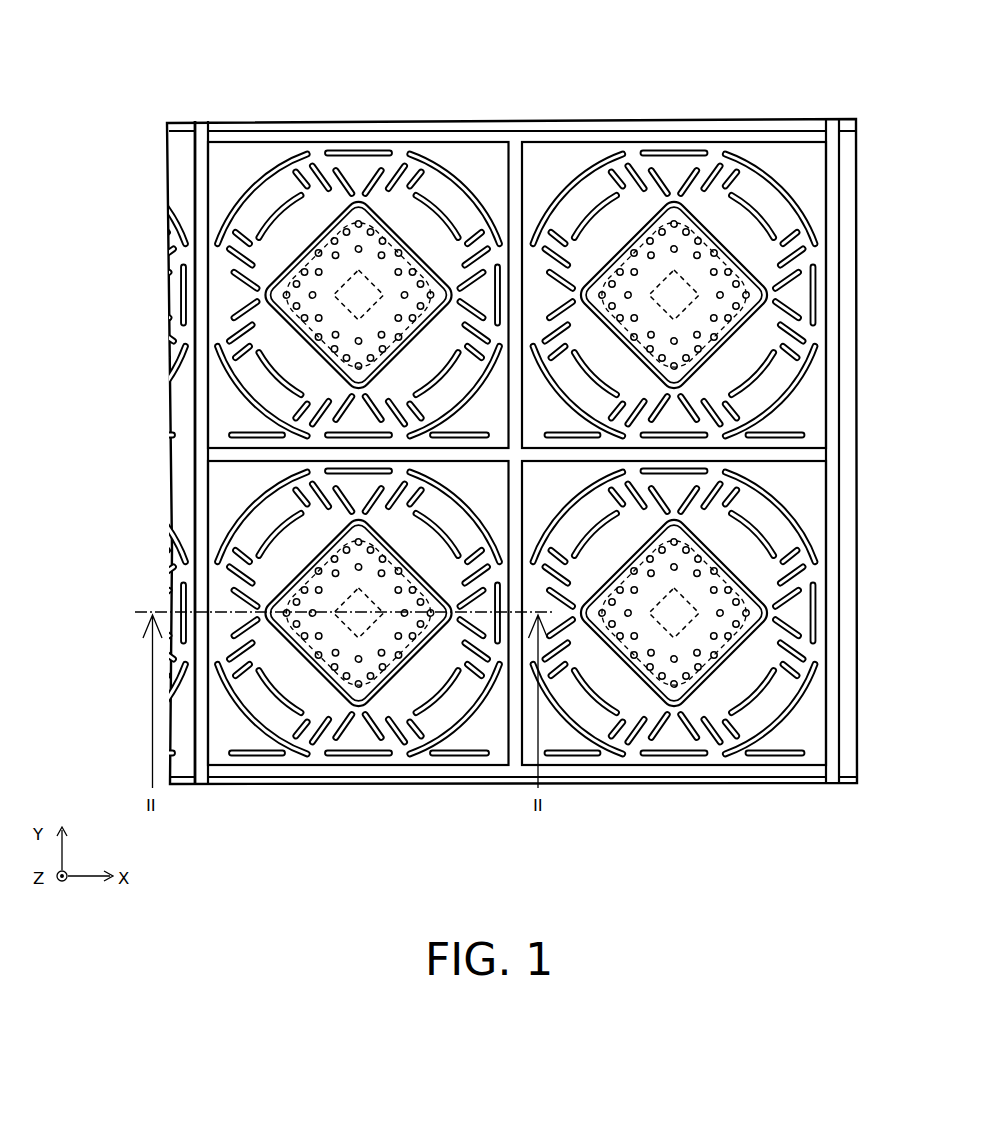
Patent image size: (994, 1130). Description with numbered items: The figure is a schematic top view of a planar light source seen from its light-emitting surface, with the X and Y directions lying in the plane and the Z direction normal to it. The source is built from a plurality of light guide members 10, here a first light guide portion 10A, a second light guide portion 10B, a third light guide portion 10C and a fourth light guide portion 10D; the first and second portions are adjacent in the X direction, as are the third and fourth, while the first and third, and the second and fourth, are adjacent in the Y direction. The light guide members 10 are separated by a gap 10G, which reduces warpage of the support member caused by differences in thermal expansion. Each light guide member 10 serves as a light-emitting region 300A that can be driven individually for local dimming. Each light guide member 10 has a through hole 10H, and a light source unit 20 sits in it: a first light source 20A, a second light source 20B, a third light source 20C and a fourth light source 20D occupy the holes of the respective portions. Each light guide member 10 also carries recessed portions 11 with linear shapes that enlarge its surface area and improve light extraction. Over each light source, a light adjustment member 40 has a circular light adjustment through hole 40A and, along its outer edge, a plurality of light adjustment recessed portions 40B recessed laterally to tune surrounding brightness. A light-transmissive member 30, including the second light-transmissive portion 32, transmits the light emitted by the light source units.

The light guide member 10 is at (522, 455).
The first light guide portion 10A is at (248, 737).
The second light guide portion 10B is at (784, 737).
The third light guide portion 10C is at (248, 173).
The fourth light guide portion 10D is at (786, 160).
The gap 10G is at (779, 455).
The through hole 10H is at (615, 278).
The recessed portion 11 is at (262, 432).
The light source unit 20 is at (516, 459).
The first light source 20A is at (390, 700).
The second light source 20B is at (642, 700).
The third light source 20C is at (377, 240).
The fourth light source 20D is at (646, 220).
The light-transmissive member 30 is at (465, 456).
The second light-transmissive portion 32 is at (288, 228).
The light adjustment member 40 is at (435, 459).
The light adjustment through hole 40A is at (318, 585).
The light adjustment recessed portion 40B is at (310, 667).
The light-emitting region 300A is at (235, 180).